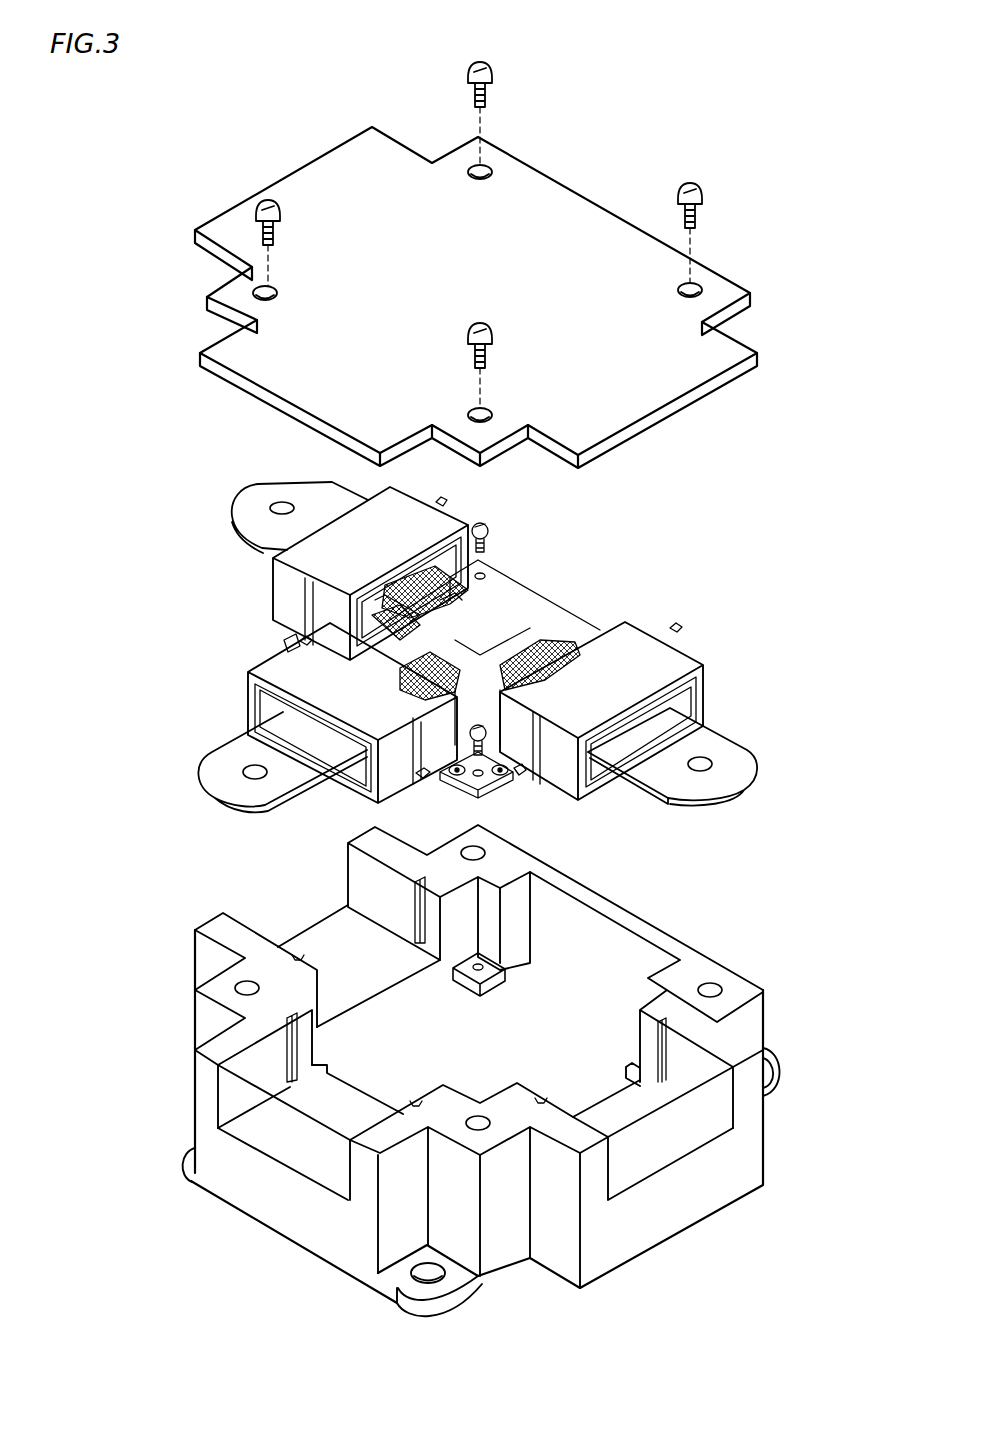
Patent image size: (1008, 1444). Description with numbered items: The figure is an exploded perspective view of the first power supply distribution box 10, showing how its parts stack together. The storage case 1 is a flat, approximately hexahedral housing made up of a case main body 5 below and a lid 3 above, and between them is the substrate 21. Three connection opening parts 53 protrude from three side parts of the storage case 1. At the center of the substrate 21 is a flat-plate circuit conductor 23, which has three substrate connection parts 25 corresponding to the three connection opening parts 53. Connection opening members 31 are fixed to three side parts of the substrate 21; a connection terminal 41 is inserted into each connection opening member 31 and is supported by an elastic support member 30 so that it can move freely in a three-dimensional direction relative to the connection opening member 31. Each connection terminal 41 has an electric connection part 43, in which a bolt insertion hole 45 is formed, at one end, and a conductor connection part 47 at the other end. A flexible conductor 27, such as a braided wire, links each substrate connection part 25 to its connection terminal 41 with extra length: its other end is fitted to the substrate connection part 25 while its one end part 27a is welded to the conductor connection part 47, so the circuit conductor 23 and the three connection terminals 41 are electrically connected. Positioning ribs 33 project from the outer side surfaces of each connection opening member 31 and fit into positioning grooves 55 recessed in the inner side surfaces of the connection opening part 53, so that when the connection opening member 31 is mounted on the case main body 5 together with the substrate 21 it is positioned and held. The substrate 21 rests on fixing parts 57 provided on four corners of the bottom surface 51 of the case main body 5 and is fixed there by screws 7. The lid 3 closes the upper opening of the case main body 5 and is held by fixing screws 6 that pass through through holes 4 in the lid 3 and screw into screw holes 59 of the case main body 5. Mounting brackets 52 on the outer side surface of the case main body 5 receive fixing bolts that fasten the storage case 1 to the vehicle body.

The first power supply distribution box 10 is at (173, 189).
The storage case 1 is at (838, 427).
The lid 3 is at (702, 402).
The through hole 4 is at (494, 176).
The case main body 5 is at (718, 949).
The fixing screw 6 is at (496, 74).
The screw 7 is at (486, 527).
The substrate 21 is at (549, 619).
The circuit conductor 23 is at (487, 669).
The substrate connection part 25 is at (420, 656).
The flexible conductor 27 is at (472, 655).
The one end part of the flexible conductor 27a is at (410, 605).
The elastic support member 30 is at (269, 677).
The connection opening member 31 is at (295, 653).
The positioning rib 33 is at (300, 614).
The connection terminal 41 is at (227, 538).
The electric connection part 43 is at (260, 492).
The bolt insertion hole 45 is at (280, 500).
The conductor connection part 47 is at (395, 610).
The bottom surface 51 is at (552, 1013).
The mounting bracket 52 is at (770, 1055).
The connection opening part 53 is at (253, 922).
The positioning groove 55 is at (415, 890).
The fixing part 57 is at (487, 977).
The screw hole 59 is at (238, 982).